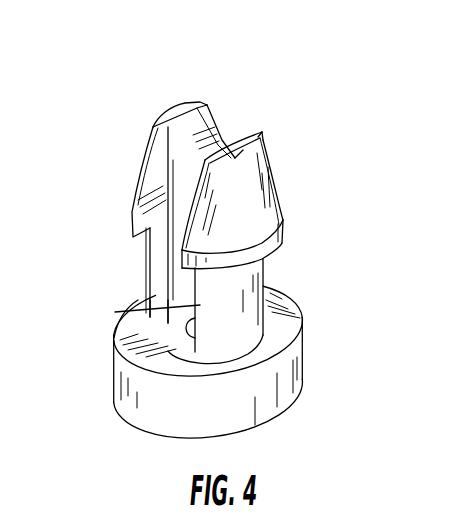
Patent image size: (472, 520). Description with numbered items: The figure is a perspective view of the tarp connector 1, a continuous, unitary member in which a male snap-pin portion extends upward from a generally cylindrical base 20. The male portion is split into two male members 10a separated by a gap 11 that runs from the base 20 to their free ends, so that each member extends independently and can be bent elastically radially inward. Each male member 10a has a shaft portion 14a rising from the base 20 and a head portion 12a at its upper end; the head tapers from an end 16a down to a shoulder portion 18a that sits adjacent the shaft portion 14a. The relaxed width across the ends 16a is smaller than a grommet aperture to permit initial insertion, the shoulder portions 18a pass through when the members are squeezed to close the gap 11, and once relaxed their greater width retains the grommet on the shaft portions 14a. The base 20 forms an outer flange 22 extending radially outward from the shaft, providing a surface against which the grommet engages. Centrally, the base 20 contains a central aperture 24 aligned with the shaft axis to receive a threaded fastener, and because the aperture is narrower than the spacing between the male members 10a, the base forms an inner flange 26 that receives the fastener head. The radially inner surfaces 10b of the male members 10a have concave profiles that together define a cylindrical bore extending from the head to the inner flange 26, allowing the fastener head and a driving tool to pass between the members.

The connector 1 is at (407, 68).
The male members 10a is at (337, 77).
The radially inner surfaces 10b is at (173, 260).
The gap 11 is at (270, 40).
The head portion 12a is at (374, 198).
The shaft portion 14a is at (367, 315).
The ends 16a is at (371, 141).
The shoulder portions 18a is at (358, 252).
The base 20 is at (362, 383).
The outer flange 22 is at (135, 307).
The central aperture 24 is at (178, 336).
The inner flange 26 is at (200, 306).